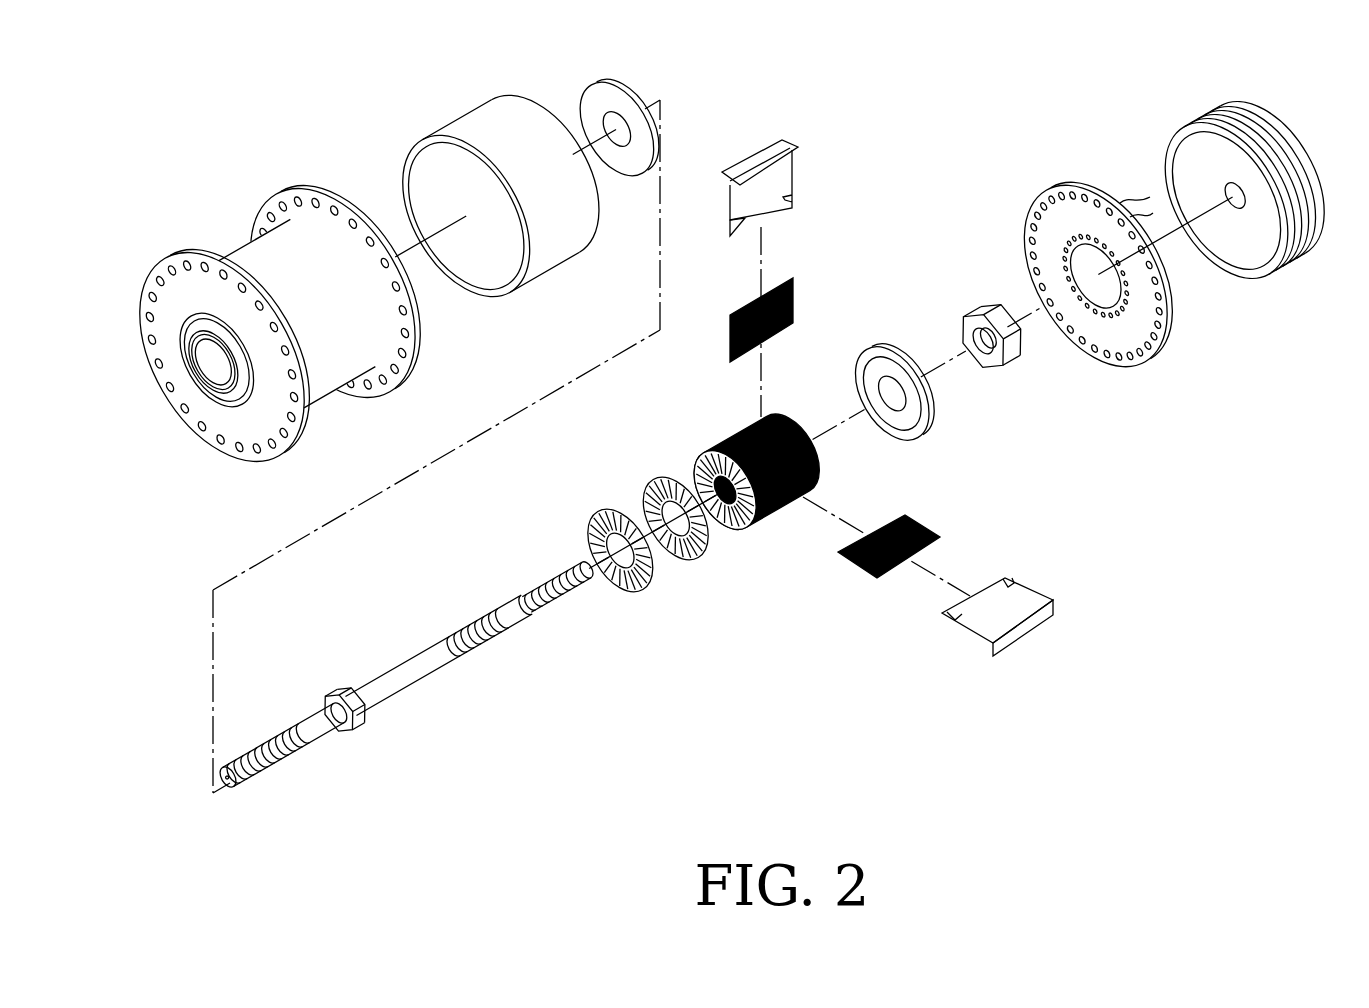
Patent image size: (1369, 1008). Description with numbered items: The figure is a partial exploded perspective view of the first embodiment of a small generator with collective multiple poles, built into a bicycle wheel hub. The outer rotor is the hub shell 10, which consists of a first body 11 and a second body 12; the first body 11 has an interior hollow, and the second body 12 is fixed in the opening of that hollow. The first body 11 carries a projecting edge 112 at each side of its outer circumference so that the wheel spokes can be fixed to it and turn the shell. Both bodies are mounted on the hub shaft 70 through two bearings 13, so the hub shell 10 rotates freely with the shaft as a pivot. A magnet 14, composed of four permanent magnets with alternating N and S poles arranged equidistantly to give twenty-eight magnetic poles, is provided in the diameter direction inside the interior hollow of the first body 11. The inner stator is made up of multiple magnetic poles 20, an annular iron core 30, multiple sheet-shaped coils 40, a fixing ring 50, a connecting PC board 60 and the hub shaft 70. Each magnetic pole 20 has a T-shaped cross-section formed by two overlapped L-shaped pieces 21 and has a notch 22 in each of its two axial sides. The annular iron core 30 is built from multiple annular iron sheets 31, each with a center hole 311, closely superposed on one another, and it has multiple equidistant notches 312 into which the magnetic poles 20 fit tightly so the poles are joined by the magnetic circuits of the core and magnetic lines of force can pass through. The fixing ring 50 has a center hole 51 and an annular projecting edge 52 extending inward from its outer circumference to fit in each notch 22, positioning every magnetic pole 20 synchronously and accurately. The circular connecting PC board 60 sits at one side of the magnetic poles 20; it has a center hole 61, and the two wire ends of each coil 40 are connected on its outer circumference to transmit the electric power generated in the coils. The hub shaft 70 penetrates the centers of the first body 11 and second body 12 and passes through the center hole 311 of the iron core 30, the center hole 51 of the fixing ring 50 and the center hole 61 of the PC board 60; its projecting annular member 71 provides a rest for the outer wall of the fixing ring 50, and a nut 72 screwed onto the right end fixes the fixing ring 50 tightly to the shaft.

The hub shell 10 is at (382, 274).
The first body 11 is at (186, 252).
The projecting edge 112 is at (363, 390).
The bearing 13 is at (215, 362).
The magnet 14 is at (482, 98).
The fixing ring 50 is at (775, 281).
The center hole 51 is at (890, 395).
The annular projecting edge 52 is at (913, 432).
The magnetic pole 20 is at (906, 401).
The L-shaped piece 21 is at (737, 165).
The notch 22 is at (740, 220).
The sheet-shaped coil 40 is at (726, 331).
The annular iron core 30 is at (728, 425).
The annular iron sheet 31 is at (625, 557).
The center hole 311 is at (622, 562).
The notch 312 is at (593, 556).
The hub shaft 70 is at (727, 495).
The projecting annular member 71 is at (352, 737).
The nut 72 is at (1012, 360).
The connecting PC board 60 is at (1098, 258).
The center hole 61 is at (1098, 313).
The second body 12 is at (1293, 127).